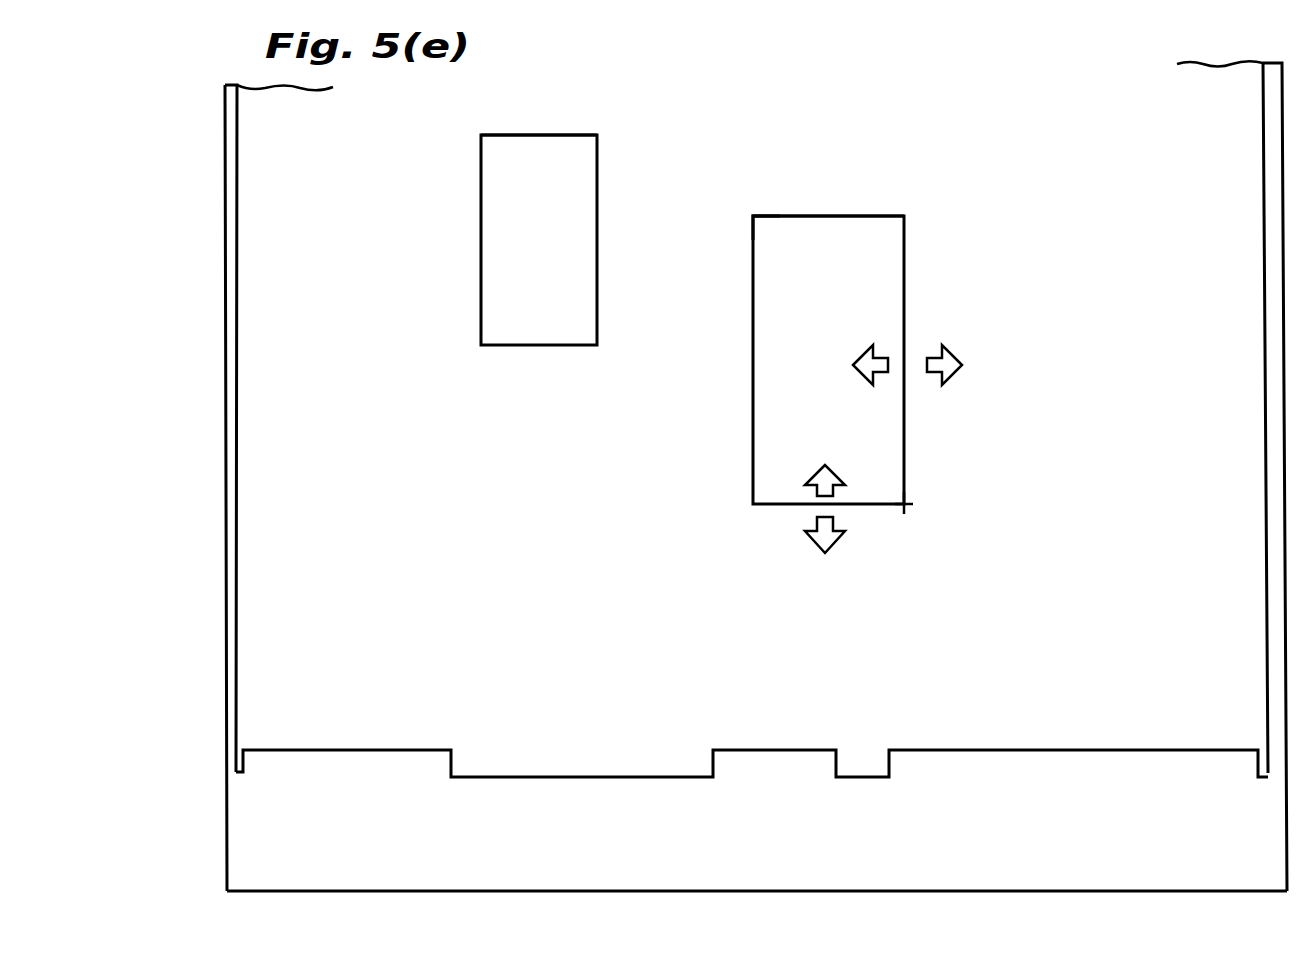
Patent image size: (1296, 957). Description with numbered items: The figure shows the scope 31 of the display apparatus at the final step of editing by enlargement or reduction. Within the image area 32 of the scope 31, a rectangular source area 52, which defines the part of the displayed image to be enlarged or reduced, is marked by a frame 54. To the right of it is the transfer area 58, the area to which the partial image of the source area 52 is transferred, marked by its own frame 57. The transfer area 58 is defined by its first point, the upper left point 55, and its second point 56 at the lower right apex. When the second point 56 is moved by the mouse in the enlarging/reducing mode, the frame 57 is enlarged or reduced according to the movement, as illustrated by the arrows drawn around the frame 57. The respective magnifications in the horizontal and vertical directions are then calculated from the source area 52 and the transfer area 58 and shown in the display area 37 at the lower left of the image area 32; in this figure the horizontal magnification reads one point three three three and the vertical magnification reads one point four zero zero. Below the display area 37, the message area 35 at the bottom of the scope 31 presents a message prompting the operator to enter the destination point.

The scope 31 is at (210, 565).
The image area 32 is at (1145, 183).
The message area 35 is at (252, 838).
The display area 37 is at (243, 763).
The source area 52 is at (572, 193).
The frame 54 is at (538, 135).
The upper left point 55 is at (753, 216).
The second point 56 is at (913, 504).
The frame 57 is at (838, 216).
The transfer area 58 is at (868, 293).